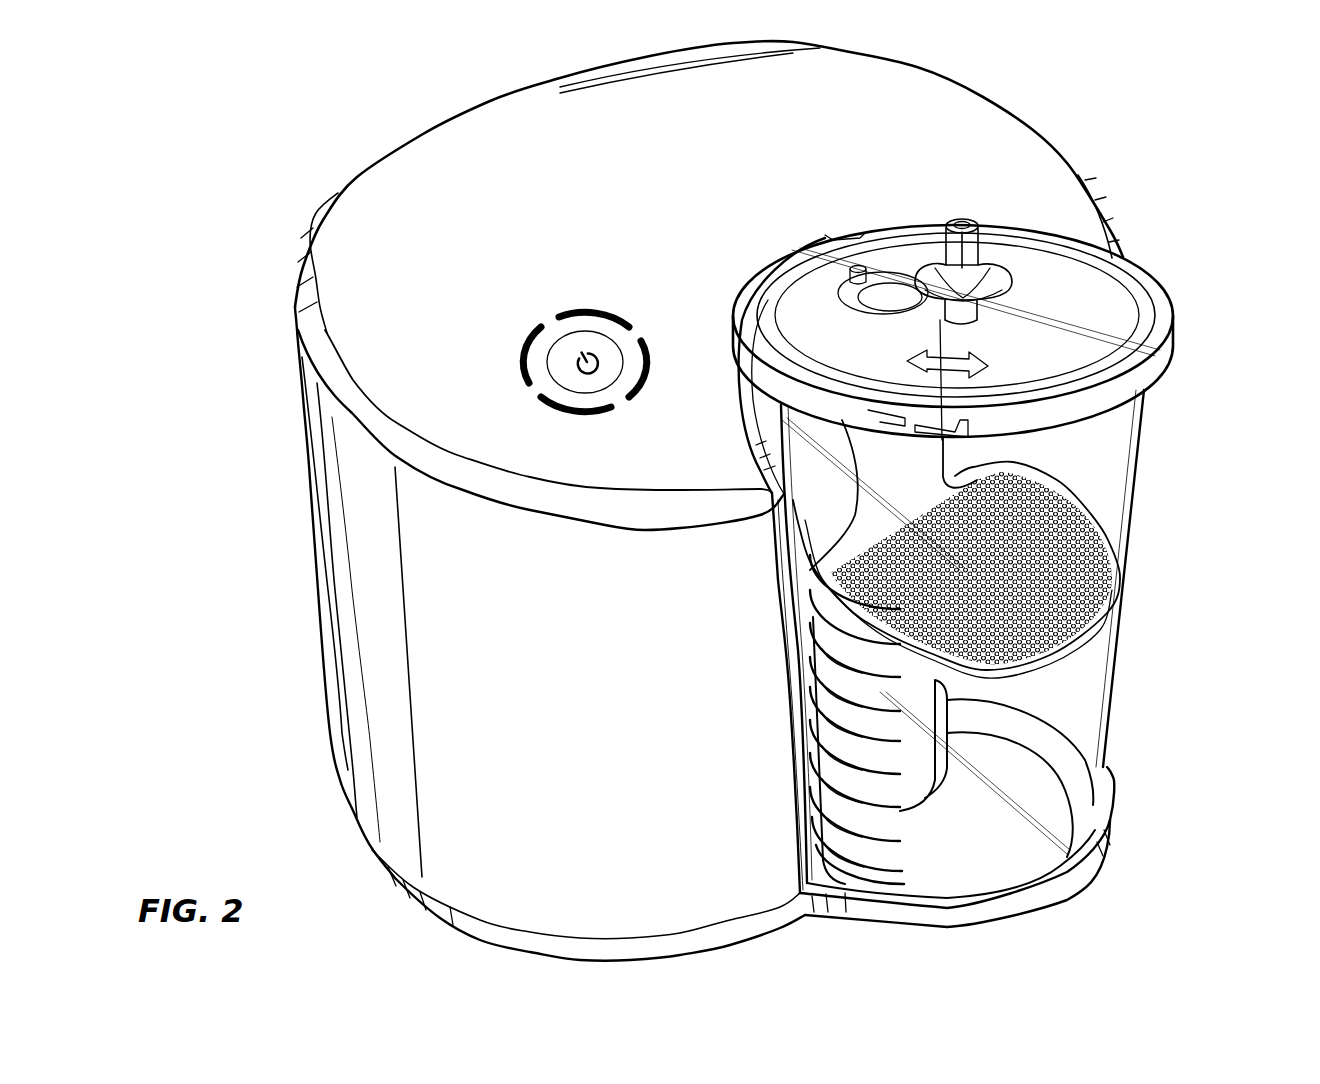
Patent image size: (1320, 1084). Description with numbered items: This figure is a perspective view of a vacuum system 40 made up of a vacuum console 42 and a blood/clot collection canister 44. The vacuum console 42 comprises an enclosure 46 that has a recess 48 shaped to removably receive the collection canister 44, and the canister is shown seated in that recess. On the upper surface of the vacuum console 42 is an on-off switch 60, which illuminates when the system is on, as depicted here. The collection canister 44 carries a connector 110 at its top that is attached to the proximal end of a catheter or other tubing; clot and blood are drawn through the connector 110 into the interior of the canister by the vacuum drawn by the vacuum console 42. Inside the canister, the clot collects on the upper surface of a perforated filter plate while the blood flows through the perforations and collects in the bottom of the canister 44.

The vacuum system 40 is at (280, 98).
The vacuum console 42 is at (247, 567).
The blood/clot collection canister 44 is at (1162, 540).
The enclosure 46 is at (370, 652).
The recess 48 is at (790, 712).
The on-off switch 60 is at (567, 357).
The connector 110 is at (993, 245).